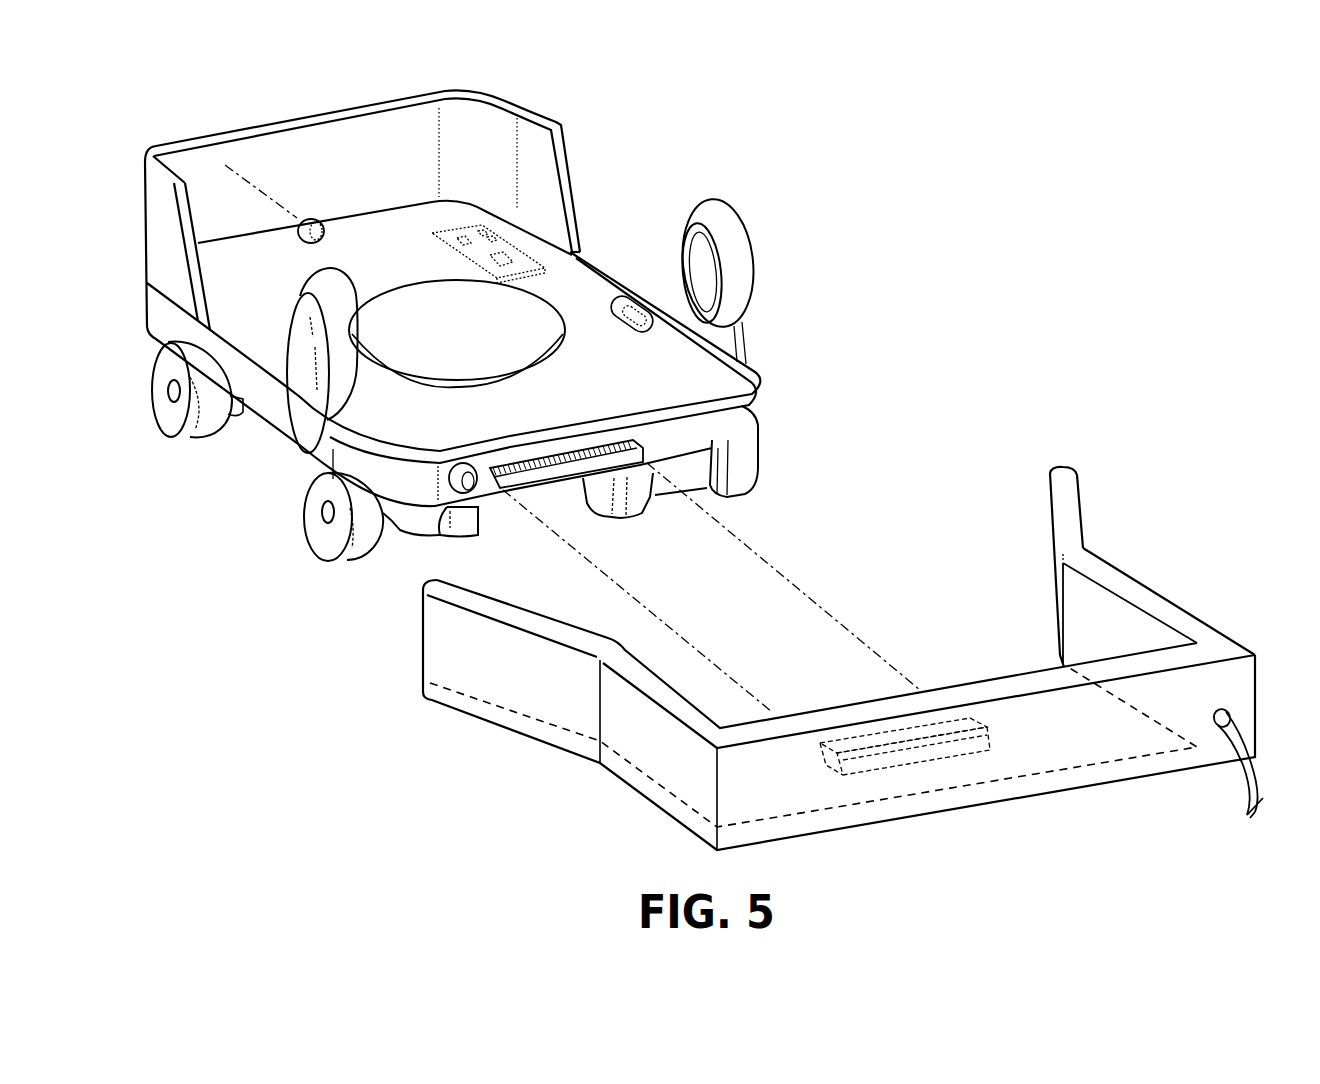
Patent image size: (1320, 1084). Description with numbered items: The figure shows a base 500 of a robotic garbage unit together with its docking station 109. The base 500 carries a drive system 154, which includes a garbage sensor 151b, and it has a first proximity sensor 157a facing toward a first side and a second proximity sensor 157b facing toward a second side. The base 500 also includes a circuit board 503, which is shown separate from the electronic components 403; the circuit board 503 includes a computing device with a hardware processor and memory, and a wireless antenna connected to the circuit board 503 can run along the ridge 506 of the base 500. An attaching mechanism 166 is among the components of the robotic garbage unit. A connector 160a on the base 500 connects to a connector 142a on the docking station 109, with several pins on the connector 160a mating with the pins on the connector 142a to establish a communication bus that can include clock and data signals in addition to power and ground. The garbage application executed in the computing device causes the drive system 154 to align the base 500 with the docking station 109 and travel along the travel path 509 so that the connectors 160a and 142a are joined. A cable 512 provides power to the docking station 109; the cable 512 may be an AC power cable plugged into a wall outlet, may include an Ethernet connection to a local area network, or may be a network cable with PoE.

The base 500 is at (275, 716).
The ridge 506 is at (555, 121).
The first proximity sensor 157a is at (309, 217).
The circuit board 503 is at (460, 253).
The garbage sensor 151b is at (430, 344).
The attaching mechanism 166 is at (722, 203).
The electronic components 403 is at (648, 328).
The second proximity sensor 157b is at (461, 463).
The connector 160a is at (643, 444).
The drive system 154 is at (745, 470).
The travel path 509 is at (745, 540).
The docking station 109 is at (1072, 507).
The connector 142a is at (990, 742).
The cable 512 is at (1247, 810).